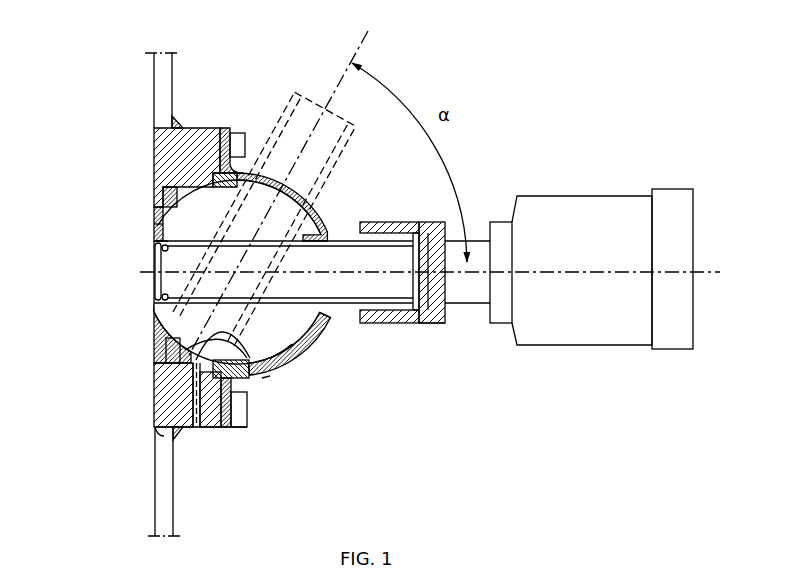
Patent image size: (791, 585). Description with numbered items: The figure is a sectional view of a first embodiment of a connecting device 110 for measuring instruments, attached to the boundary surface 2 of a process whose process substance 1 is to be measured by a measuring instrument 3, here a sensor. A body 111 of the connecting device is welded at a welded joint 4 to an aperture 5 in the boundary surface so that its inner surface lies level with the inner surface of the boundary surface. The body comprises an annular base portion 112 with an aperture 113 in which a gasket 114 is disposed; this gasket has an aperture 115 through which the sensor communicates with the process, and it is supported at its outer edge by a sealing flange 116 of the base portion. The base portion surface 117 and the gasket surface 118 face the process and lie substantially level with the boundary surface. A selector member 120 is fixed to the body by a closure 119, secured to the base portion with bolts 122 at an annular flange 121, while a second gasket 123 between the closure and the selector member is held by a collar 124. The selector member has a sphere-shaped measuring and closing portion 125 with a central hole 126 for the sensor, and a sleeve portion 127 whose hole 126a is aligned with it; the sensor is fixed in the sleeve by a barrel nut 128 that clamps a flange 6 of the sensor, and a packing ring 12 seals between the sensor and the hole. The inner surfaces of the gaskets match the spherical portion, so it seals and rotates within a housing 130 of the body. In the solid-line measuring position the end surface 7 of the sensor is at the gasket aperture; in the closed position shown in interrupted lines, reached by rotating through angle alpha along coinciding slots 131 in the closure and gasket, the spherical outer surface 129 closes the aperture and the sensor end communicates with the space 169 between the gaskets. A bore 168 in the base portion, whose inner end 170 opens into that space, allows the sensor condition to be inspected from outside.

The process and process substance 1 is at (84, 35).
The boundary surface 2 is at (167, 512).
The measuring instrument 3 is at (455, 287).
The welded joint 4 is at (174, 118).
The aperture 5 is at (160, 430).
The flange 6 is at (423, 262).
The end surface 7 is at (182, 300).
The packing ring 12 is at (170, 247).
The connecting device 110 is at (257, 114).
The body 111 is at (203, 152).
The base portion 112 is at (170, 146).
The aperture 113 is at (158, 208).
The gasket 114 is at (157, 224).
The aperture 115 is at (160, 243).
The sealing flange 116 is at (165, 195).
The base portion surface 117 is at (155, 388).
The gasket surface 118 is at (155, 324).
The closure 119 is at (281, 314).
The selector member 120 is at (318, 328).
The annular flange 121 is at (227, 428).
The bolts 122 is at (243, 415).
The gasket 123 is at (275, 352).
The collar 124 is at (243, 380).
The measuring and closing portion 125 is at (187, 317).
The hole 126 is at (152, 297).
The hole 126a is at (336, 241).
The sleeve portion 127 is at (350, 229).
The barrel nut 128 is at (437, 323).
The spherical outer surface 129 is at (190, 190).
The housing 130 is at (190, 366).
The slots 131 is at (290, 200).
The bore 168 is at (196, 418).
The space 169 is at (248, 374).
The inner end 170 is at (265, 378).